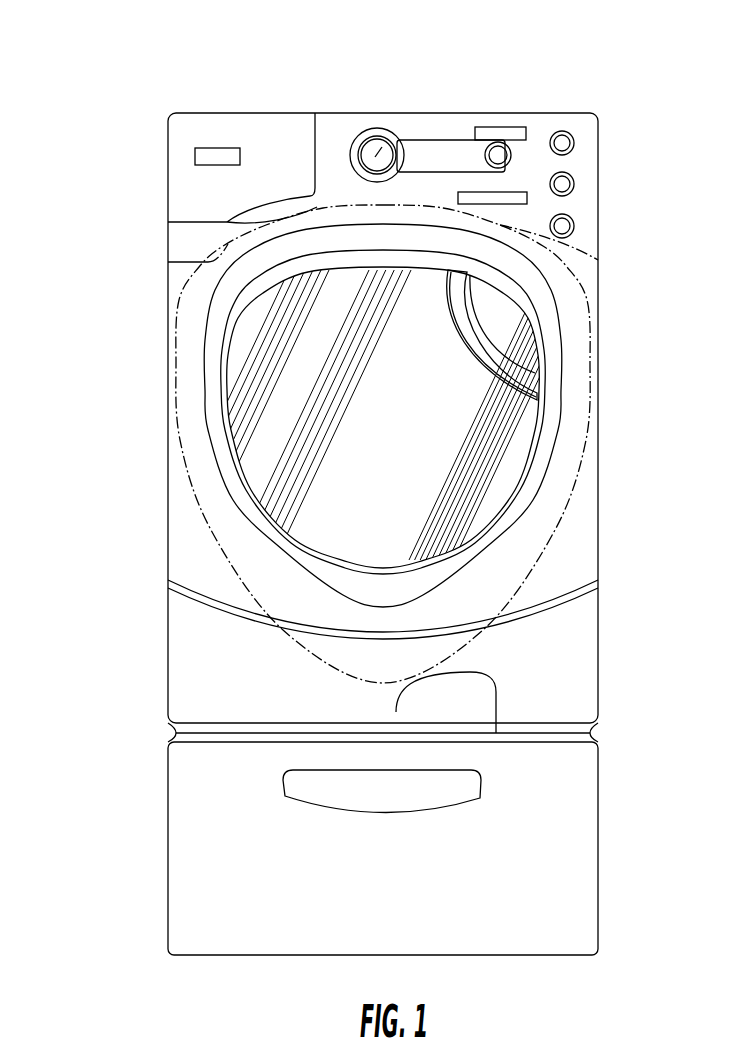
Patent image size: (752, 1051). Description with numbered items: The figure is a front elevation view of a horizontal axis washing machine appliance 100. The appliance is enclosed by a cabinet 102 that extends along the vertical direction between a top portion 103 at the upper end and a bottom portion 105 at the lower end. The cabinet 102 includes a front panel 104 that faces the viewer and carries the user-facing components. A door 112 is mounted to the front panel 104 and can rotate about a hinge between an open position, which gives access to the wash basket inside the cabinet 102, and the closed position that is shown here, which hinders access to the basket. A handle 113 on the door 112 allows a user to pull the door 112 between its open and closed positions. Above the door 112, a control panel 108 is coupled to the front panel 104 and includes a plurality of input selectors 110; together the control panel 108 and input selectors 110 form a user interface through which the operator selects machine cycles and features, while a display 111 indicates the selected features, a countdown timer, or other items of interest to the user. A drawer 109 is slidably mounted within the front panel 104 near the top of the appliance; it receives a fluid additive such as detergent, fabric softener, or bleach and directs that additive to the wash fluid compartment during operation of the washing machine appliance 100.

The washing machine appliance 100 is at (125, 122).
The cabinet 102 is at (598, 678).
The top portion 103 is at (603, 117).
The front panel 104 is at (190, 543).
The bottom portion 105 is at (603, 941).
The control panel 108 is at (508, 103).
The drawer 109 is at (257, 124).
The input selectors 110 is at (381, 157).
The display 111 is at (437, 157).
The door 112 is at (538, 438).
The handle 113 is at (517, 373).